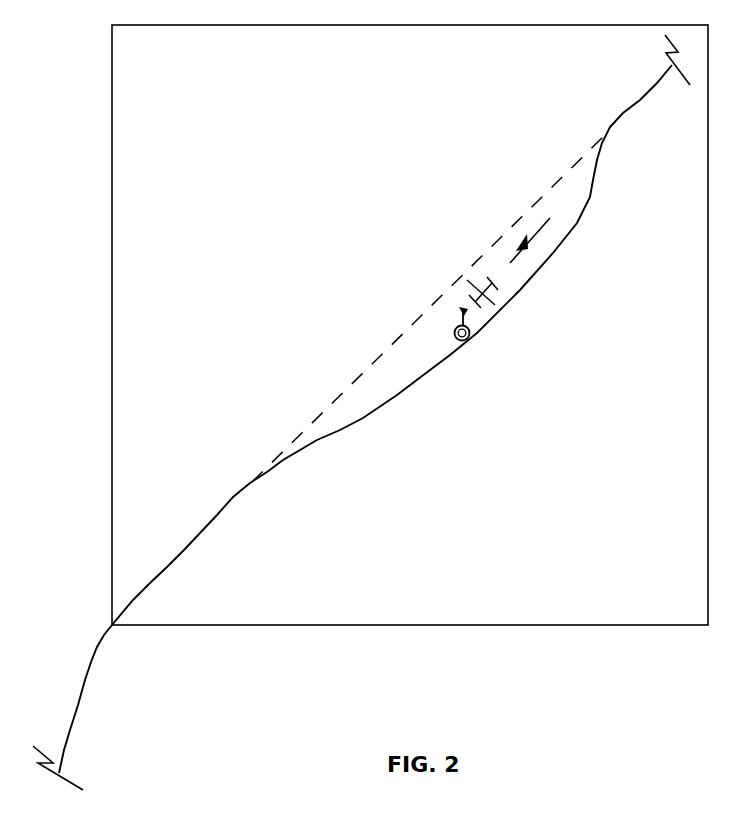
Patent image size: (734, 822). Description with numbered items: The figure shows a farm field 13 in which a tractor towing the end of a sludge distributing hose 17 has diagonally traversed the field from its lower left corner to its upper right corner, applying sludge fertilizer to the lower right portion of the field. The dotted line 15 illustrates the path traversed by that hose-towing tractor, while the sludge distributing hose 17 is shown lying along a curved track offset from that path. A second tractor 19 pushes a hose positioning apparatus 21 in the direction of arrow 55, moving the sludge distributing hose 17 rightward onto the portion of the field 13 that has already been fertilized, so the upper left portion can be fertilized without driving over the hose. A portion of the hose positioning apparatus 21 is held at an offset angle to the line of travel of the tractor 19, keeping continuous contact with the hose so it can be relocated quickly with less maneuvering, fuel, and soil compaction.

The farm field 13 is at (176, 86).
The dotted line 15 is at (372, 365).
The sludge distributing hose 17 is at (319, 444).
The tractor 19 is at (480, 280).
The hose positioning apparatus 21 is at (471, 336).
The arrow 55 is at (533, 232).